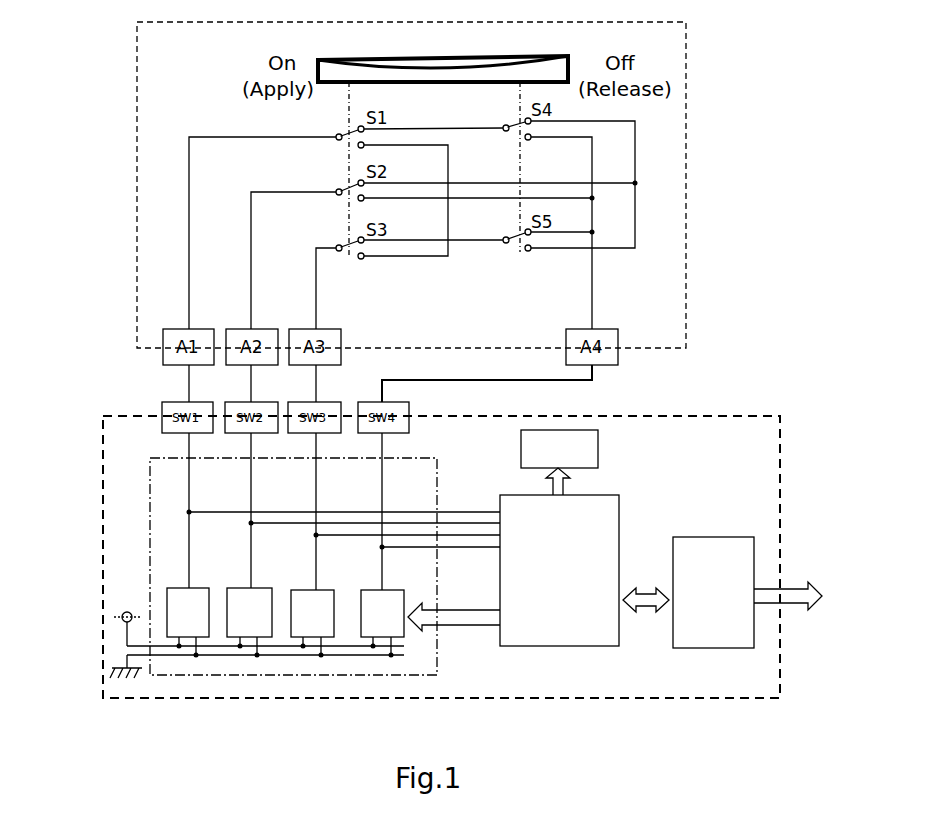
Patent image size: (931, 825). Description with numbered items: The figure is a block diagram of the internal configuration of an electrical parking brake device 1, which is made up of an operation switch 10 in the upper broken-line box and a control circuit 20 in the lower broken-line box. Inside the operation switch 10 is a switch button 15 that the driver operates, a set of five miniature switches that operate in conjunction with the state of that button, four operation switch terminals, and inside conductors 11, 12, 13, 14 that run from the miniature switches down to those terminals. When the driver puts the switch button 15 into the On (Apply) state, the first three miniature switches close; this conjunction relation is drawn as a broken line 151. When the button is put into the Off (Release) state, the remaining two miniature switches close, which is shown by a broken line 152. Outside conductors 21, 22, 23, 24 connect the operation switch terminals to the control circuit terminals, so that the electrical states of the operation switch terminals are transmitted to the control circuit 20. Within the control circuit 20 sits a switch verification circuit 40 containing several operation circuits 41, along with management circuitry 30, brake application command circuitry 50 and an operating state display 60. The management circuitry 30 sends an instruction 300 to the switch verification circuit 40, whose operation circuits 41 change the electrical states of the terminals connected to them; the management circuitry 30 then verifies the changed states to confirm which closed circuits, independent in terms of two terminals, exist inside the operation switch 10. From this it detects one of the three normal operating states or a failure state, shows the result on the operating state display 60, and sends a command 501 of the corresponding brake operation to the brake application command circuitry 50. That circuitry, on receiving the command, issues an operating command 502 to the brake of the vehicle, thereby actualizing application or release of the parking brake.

The electrical parking brake device 1 is at (723, 324).
The operation switch 10 is at (686, 275).
The inside conductor 11 is at (189, 297).
The inside conductor 12 is at (251, 283).
The inside conductor 13 is at (316, 277).
The inside conductor 14 is at (592, 310).
The switch button 15 is at (432, 66).
The broken line 151 is at (349, 167).
The broken line 152 is at (520, 175).
The control circuit 20 is at (103, 545).
The outside conductor 21 is at (189, 380).
The outside conductor 22 is at (251, 392).
The outside conductor 23 is at (316, 384).
The outside conductor 24 is at (425, 380).
The management circuitry 30 is at (619, 526).
The switch verification circuit 40 is at (150, 505).
The operation circuits 41 is at (370, 590).
The brake application command circuitry 50 is at (718, 537).
The operating state display 60 is at (572, 430).
The instruction 300 is at (460, 628).
The command 501 is at (645, 612).
The operating command 502 is at (772, 604).